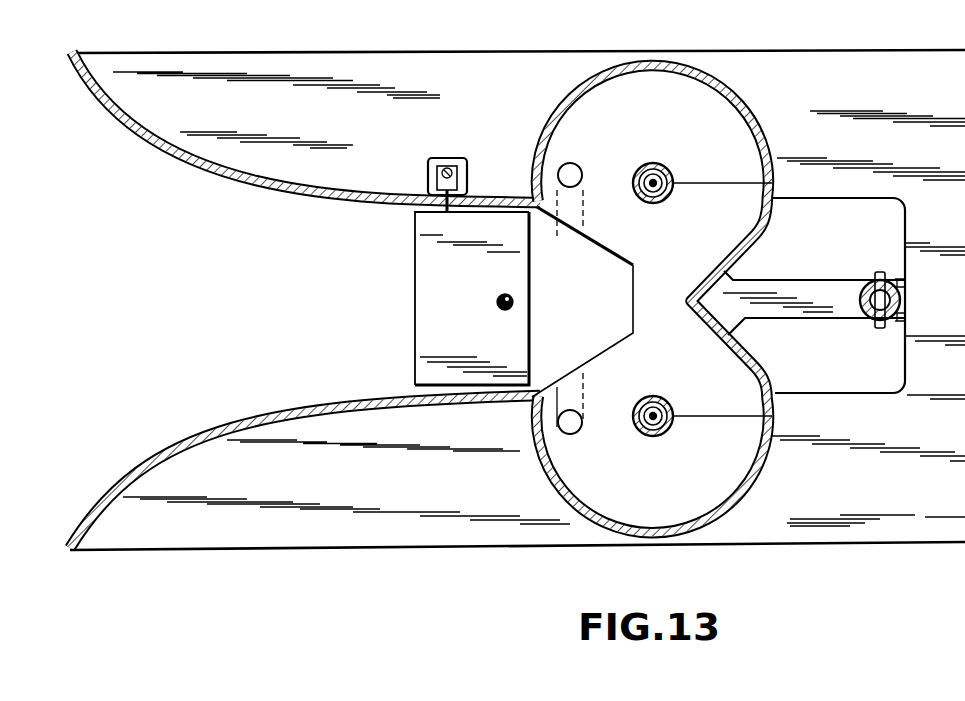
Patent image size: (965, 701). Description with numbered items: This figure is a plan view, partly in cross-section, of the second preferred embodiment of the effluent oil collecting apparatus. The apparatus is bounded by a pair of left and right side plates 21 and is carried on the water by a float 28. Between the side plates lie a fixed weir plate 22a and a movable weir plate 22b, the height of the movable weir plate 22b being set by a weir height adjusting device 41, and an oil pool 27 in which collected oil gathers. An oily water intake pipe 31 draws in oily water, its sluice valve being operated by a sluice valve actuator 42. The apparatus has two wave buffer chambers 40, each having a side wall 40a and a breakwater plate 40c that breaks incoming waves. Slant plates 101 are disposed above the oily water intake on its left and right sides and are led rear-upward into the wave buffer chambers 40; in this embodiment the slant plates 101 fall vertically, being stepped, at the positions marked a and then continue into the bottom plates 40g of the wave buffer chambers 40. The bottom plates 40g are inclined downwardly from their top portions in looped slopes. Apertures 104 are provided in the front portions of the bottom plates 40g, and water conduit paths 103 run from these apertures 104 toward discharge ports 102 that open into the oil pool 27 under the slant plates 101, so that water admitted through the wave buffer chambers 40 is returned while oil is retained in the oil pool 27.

The side plates 21 is at (160, 147).
The float 28 is at (392, 546).
The wave buffer chambers 40 is at (762, 126).
The bottom plates of the wave buffer chambers 40g is at (655, 118).
The breakwater plate 40c is at (704, 291).
The side wall of the wave buffer chamber 40a is at (740, 487).
The weir height adjusting device 41 is at (428, 165).
The sluice valve actuator 42 is at (662, 172).
The apertures 104 is at (598, 152).
The water conduit paths 103 is at (585, 386).
The discharge ports 102 is at (548, 217).
The slant plates 101 is at (630, 253).
The oil pool 27 is at (567, 313).
The movable weir plate 22b is at (427, 300).
The fixed weir plate 22a is at (532, 320).
The oily water intake pipe 31 is at (813, 302).
The stepped positions of the slant plates a is at (728, 188).